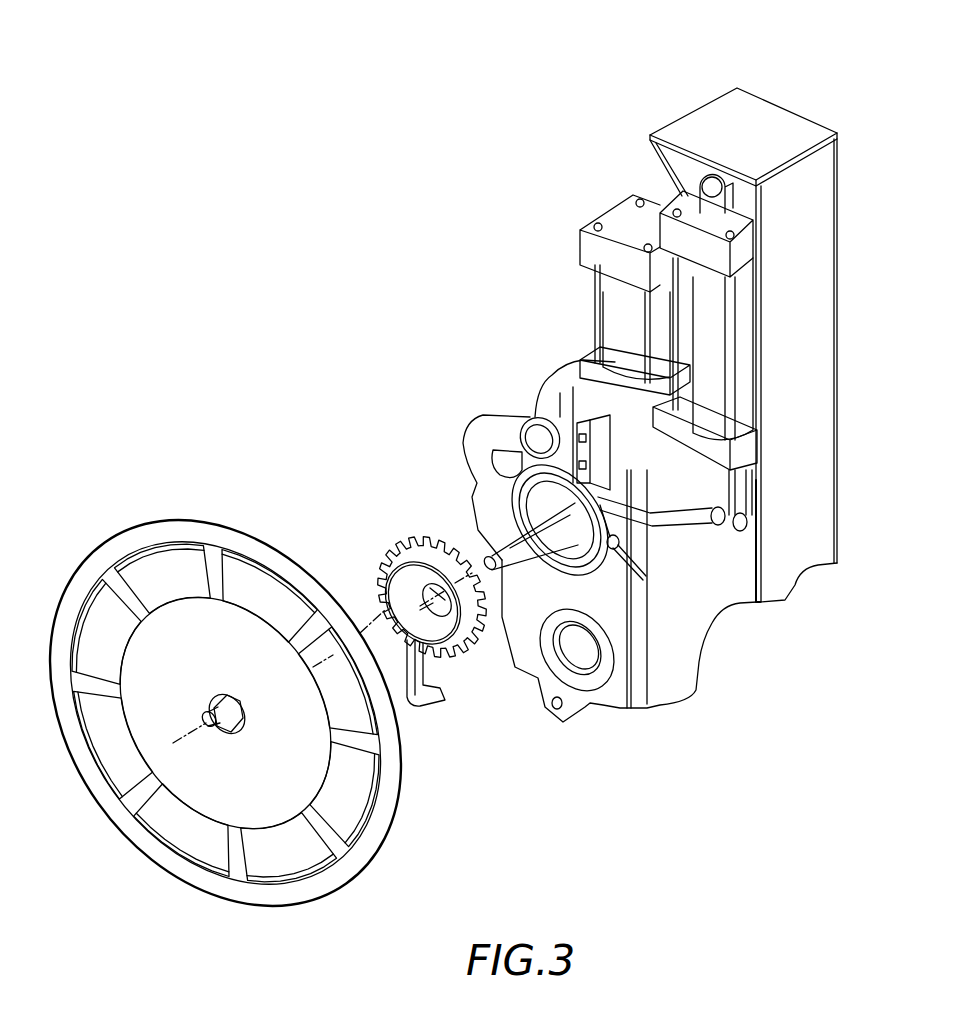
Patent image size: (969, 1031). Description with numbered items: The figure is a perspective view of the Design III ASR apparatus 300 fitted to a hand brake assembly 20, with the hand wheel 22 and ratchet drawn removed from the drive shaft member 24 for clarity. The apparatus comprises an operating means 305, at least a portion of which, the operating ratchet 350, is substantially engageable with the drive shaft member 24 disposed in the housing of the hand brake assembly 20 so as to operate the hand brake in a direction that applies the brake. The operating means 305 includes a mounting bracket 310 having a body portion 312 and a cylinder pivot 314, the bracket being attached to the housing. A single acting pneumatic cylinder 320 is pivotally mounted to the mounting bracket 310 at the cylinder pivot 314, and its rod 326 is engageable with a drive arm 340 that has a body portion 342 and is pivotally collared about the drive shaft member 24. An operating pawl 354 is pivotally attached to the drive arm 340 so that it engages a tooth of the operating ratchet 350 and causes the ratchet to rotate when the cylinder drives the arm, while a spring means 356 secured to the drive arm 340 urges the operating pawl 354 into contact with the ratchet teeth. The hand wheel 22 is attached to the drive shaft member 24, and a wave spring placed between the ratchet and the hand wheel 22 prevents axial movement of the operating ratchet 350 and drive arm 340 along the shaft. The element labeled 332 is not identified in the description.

The hand brake assembly 20 is at (356, 356).
The hand wheel 22 is at (190, 521).
The drive shaft member 24 is at (494, 548).
The ASR apparatus 300 is at (570, 229).
The operating means 305 is at (686, 92).
The mounting bracket 310 is at (794, 90).
The body portion 312 is at (818, 395).
The cylinder pivot 314 is at (700, 186).
The single acting pneumatic cylinder 320 is at (713, 318).
The rod 326 is at (745, 493).
The cylinder head block 332 is at (755, 225).
The drive arm 340 is at (779, 557).
The body portion 342 is at (684, 537).
The operating ratchet 350 is at (405, 548).
The operating pawl 354 is at (622, 587).
The spring means 356 is at (622, 565).